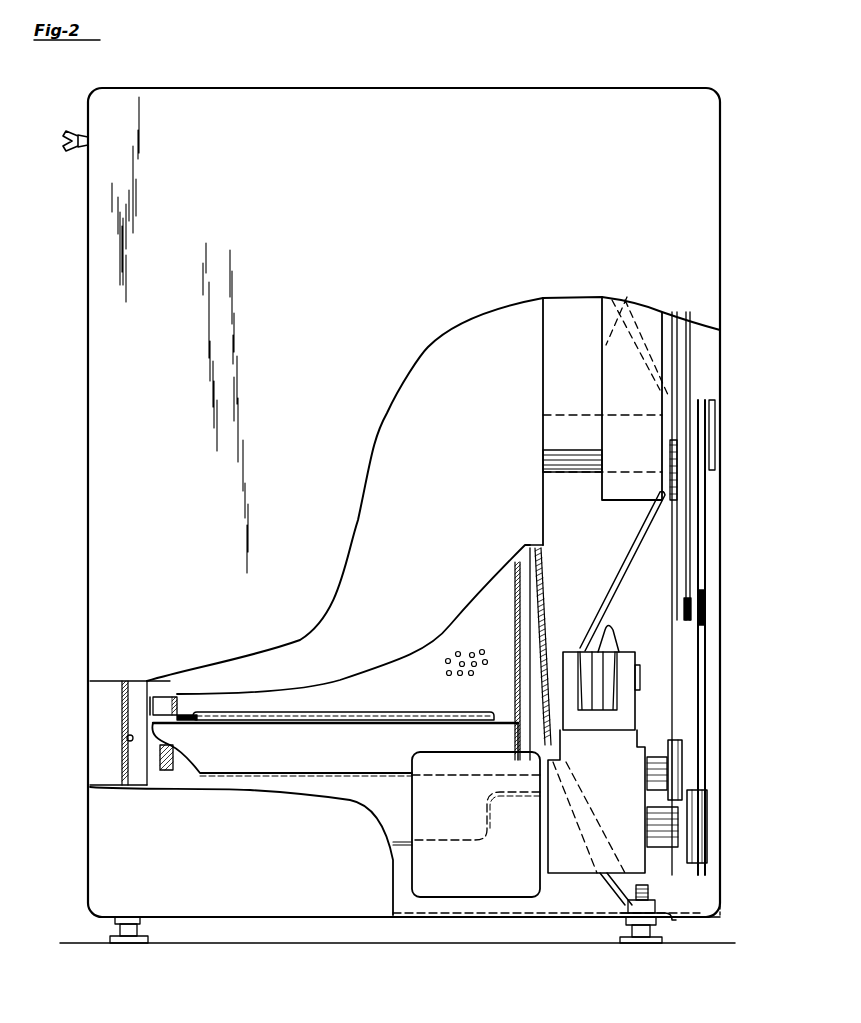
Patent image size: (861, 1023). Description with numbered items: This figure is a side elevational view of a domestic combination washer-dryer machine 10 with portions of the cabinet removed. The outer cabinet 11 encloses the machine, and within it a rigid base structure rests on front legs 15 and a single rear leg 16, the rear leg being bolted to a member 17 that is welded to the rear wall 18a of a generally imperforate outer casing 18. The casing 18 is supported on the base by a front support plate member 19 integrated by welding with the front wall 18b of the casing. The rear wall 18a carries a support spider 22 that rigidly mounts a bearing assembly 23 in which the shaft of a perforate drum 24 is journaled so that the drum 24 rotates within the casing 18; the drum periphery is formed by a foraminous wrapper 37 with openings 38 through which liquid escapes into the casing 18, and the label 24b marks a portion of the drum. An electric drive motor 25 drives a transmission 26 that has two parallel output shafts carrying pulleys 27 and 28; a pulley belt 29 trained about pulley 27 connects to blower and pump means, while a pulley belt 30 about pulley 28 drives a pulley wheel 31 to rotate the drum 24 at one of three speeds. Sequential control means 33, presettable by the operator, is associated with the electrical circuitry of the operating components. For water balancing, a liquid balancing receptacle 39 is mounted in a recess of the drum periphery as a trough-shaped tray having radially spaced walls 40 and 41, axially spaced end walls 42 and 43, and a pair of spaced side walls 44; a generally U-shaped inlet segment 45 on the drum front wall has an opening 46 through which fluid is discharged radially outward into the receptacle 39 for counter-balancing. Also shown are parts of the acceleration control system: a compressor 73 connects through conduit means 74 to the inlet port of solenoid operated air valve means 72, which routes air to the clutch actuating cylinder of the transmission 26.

The combination washer-dryer 10 is at (530, 76).
The outer cabinet 11 is at (87, 313).
The front legs 15 is at (128, 938).
The rear leg 16 is at (642, 938).
The member 17 is at (588, 810).
The outer casing 18 is at (550, 592).
The rear wall 18a is at (541, 630).
The front wall 18b is at (121, 745).
The front support plate member 19 is at (120, 766).
The support spider 22 is at (606, 341).
The bearing assembly 23 is at (580, 481).
The perforate drum 24 is at (515, 706).
The basket flange 24b is at (185, 712).
The electric drive motor 25 is at (482, 878).
The transmission 26 is at (641, 862).
The pulley 27 is at (683, 763).
The pulley 28 is at (706, 837).
The pulley belt 29 is at (673, 663).
The pulley belt 30 is at (700, 704).
The pulley wheel 31 is at (706, 553).
The sequential control means 33 is at (67, 140).
The foraminous wrapper 37 is at (456, 703).
The openings 38 is at (466, 653).
The liquid balancing receptacle 39 is at (316, 786).
The radially spaced wall 40 is at (357, 778).
The radially spaced wall 41 is at (295, 712).
The end wall 42 is at (180, 758).
The end wall 43 is at (516, 736).
The side walls 44 is at (262, 790).
The inlet segment 45 is at (142, 707).
The opening 46 is at (172, 700).
The solenoid operated air valve means 72 is at (600, 736).
The compressor 73 is at (622, 690).
The conduit means 74 is at (613, 640).